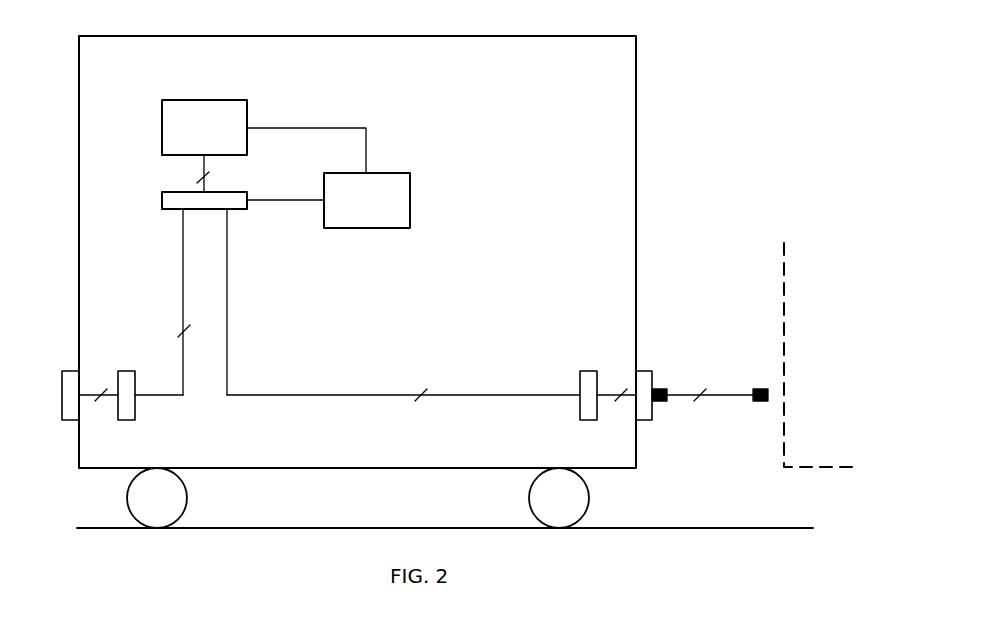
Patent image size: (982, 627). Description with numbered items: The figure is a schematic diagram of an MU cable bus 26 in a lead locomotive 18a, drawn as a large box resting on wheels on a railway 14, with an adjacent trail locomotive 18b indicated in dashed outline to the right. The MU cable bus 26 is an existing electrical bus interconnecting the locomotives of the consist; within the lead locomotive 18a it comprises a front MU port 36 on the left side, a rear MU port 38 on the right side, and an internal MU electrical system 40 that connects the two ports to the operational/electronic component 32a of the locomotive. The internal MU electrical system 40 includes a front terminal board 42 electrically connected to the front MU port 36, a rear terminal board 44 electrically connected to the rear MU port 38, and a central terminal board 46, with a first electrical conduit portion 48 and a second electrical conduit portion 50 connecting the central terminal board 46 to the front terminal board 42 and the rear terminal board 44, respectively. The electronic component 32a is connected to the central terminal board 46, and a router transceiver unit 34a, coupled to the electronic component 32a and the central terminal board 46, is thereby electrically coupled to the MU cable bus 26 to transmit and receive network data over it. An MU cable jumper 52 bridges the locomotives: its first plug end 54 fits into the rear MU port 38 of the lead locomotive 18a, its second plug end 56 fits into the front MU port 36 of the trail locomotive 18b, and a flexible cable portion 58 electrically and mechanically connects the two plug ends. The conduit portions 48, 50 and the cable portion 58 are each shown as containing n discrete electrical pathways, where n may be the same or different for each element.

The railway 14 is at (731, 527).
The lead locomotive 18a is at (636, 100).
The trail locomotive 18b is at (784, 268).
The MU cable bus 26 is at (70, 338).
The operational/electronic component 32a is at (162, 128).
The router transceiver unit 34a is at (410, 200).
The front MU port 36 is at (62, 393).
The rear MU port 38 is at (647, 371).
The internal MU electrical system 40 is at (474, 345).
The front terminal board 42 is at (127, 371).
The rear terminal board 44 is at (588, 371).
The central terminal board 46 is at (162, 200).
The first electrical conduit portion 48 is at (183, 282).
The second electrical conduit portion 50 is at (227, 285).
The MU cable jumper 52 is at (719, 345).
The first plug end 54 is at (661, 401).
The second plug end 56 is at (759, 401).
The flexible cable portion 58 is at (688, 395).